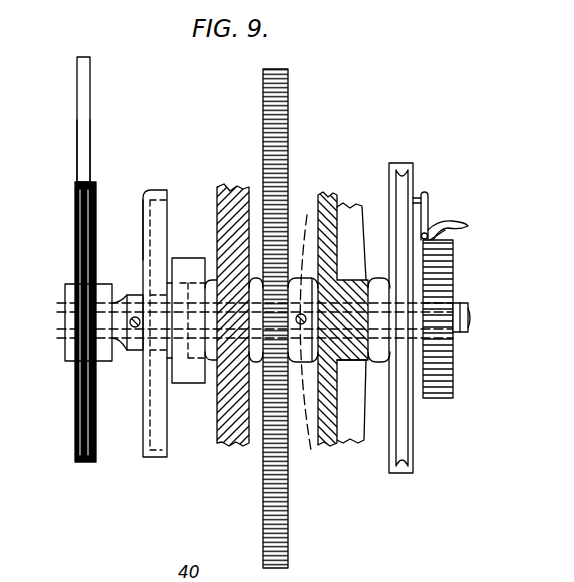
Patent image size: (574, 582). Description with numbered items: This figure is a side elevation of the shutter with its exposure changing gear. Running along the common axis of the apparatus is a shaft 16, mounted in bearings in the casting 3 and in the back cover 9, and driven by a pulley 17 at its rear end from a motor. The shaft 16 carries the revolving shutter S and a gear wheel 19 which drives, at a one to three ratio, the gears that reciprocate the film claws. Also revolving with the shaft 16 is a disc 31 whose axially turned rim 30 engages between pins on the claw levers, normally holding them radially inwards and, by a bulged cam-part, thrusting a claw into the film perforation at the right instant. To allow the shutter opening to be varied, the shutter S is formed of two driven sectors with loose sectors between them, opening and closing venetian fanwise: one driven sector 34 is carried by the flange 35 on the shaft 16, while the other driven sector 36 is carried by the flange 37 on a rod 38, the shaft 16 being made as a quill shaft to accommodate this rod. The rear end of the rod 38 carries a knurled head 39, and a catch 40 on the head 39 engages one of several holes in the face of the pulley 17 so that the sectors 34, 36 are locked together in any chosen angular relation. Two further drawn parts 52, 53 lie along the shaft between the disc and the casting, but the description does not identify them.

The revolving shutter S is at (82, 87).
The casting 3 is at (236, 206).
The back cover 9 is at (336, 400).
The shaft 16 is at (307, 215).
The pulley 17 is at (400, 470).
The gear wheel 19 is at (289, 82).
The rim 30 is at (161, 460).
The disc 31 is at (143, 230).
The driven sector 34 is at (91, 118).
The flange 35 is at (105, 345).
The driven sector 36 is at (75, 140).
The flange 37 is at (70, 319).
The rod 38 is at (338, 448).
The knurled head 39 is at (440, 388).
The catch 40 is at (430, 195).
The block 52 is at (182, 385).
The collar 53 is at (211, 362).